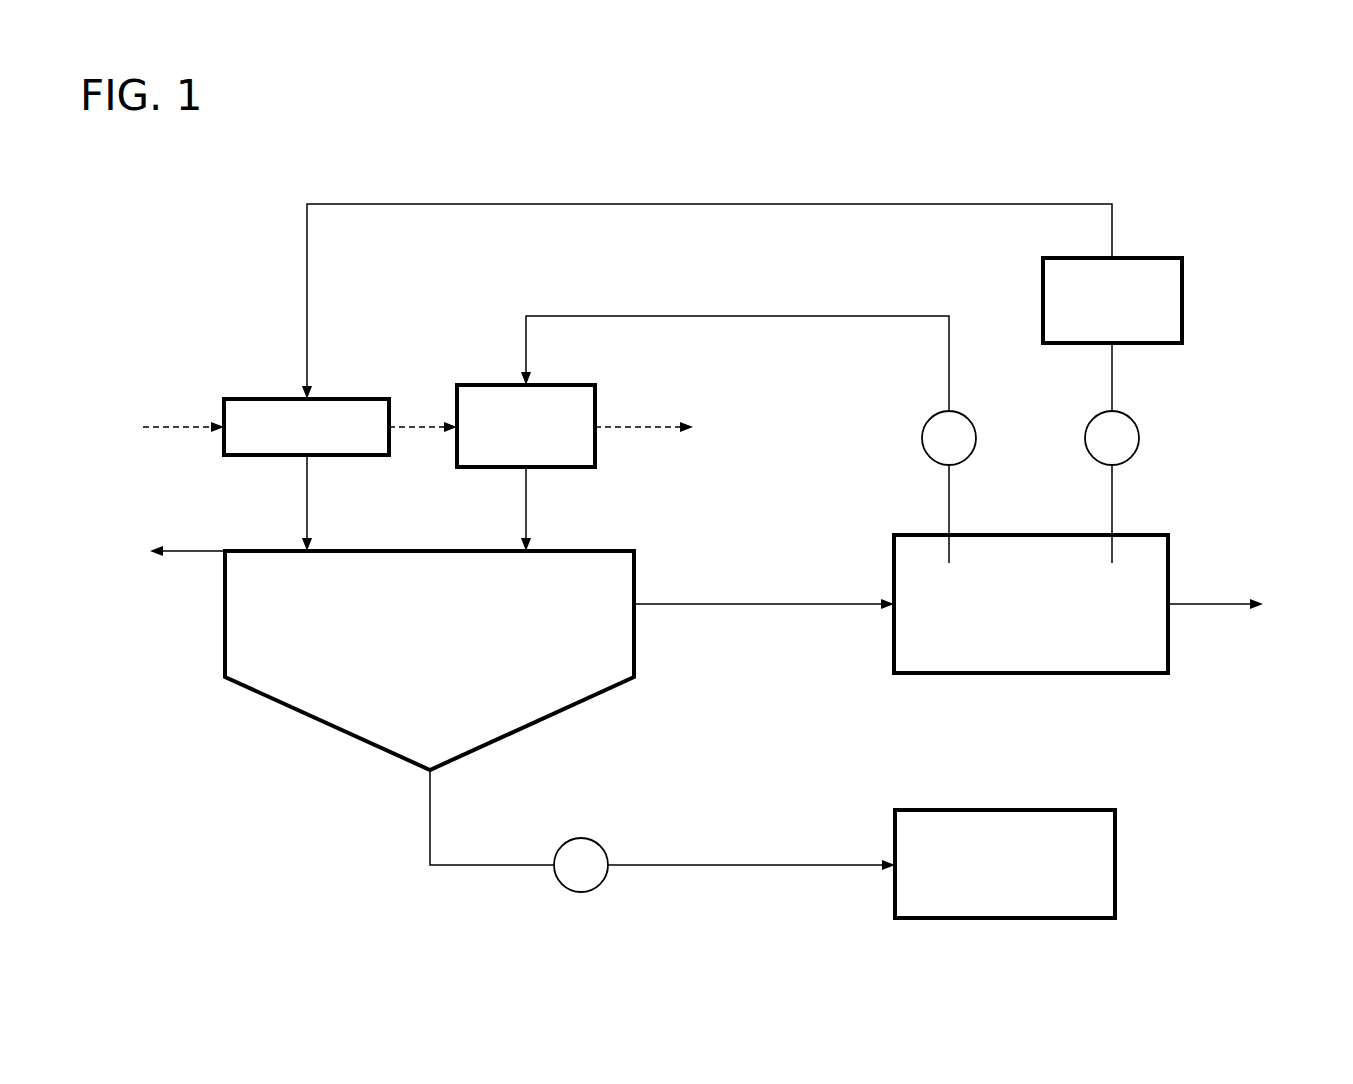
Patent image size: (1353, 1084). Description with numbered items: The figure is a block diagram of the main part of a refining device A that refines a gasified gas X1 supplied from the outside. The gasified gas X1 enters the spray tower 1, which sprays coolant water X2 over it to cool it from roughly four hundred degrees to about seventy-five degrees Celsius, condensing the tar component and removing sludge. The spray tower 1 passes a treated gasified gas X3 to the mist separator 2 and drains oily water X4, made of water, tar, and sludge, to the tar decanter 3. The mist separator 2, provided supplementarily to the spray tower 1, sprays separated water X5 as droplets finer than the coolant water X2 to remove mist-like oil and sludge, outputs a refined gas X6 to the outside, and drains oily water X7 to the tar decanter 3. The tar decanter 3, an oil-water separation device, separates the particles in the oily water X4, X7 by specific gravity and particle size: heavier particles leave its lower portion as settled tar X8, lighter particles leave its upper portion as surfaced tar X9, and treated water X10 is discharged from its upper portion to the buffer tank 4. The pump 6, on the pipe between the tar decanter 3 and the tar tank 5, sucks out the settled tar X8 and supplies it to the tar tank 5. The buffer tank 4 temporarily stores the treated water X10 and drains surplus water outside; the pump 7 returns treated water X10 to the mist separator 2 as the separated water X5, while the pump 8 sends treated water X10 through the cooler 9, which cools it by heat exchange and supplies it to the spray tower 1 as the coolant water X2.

The refining device A is at (222, 230).
The spray tower 1 is at (250, 399).
The mist separator 2 is at (478, 385).
The tar decanter 3 is at (224, 630).
The buffer tank 4 is at (893, 568).
The tar tank 5 is at (1003, 809).
The pump 6 is at (578, 838).
The pump 7 is at (977, 434).
The pump 8 is at (1140, 434).
The cooler 9 is at (1183, 296).
The gasified gas X1 is at (168, 427).
The coolant water X2 is at (307, 343).
The treated gasified gas X3 is at (415, 425).
The oily water X4 is at (307, 517).
The separated water X5 is at (718, 316).
The refined gas X6 is at (666, 427).
The oily water X7 is at (526, 510).
The settled tar X8 is at (430, 822).
The surfaced tar X9 is at (167, 548).
The treated water X10 is at (720, 603).